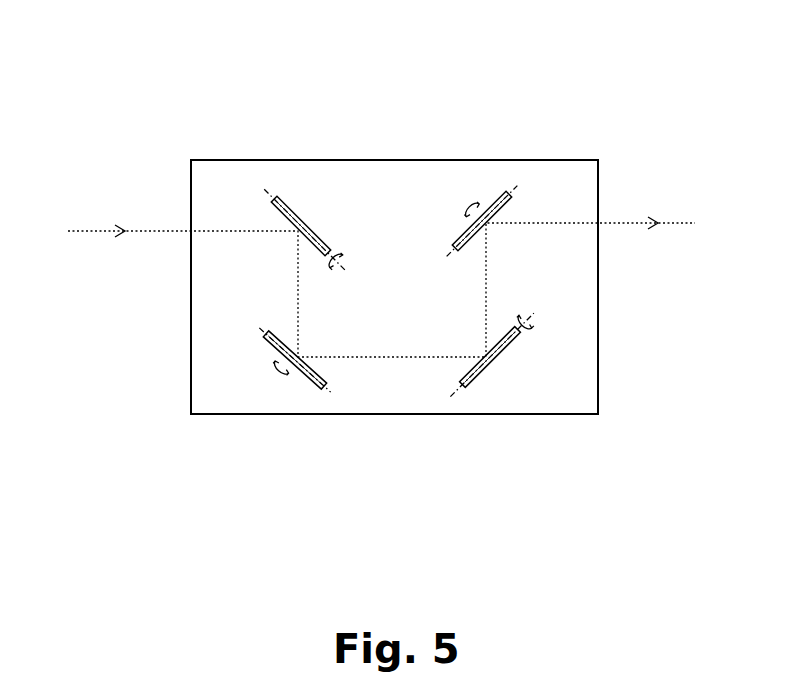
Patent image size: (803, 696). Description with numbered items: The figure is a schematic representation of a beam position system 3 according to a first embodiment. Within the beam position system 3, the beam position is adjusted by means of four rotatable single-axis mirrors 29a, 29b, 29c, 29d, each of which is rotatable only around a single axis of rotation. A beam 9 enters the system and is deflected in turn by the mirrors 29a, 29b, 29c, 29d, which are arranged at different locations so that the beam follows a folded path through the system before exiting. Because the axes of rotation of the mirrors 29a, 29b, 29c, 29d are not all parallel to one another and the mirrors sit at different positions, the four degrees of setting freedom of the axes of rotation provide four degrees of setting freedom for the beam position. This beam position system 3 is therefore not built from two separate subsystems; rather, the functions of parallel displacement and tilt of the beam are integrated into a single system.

The beam position system 3 is at (137, 113).
The laser beam 9 is at (134, 231).
The single-axis mirror 29a is at (298, 212).
The single-axis mirror 29b is at (302, 387).
The single-axis mirror 29c is at (481, 380).
The single-axis mirror 29d is at (489, 215).